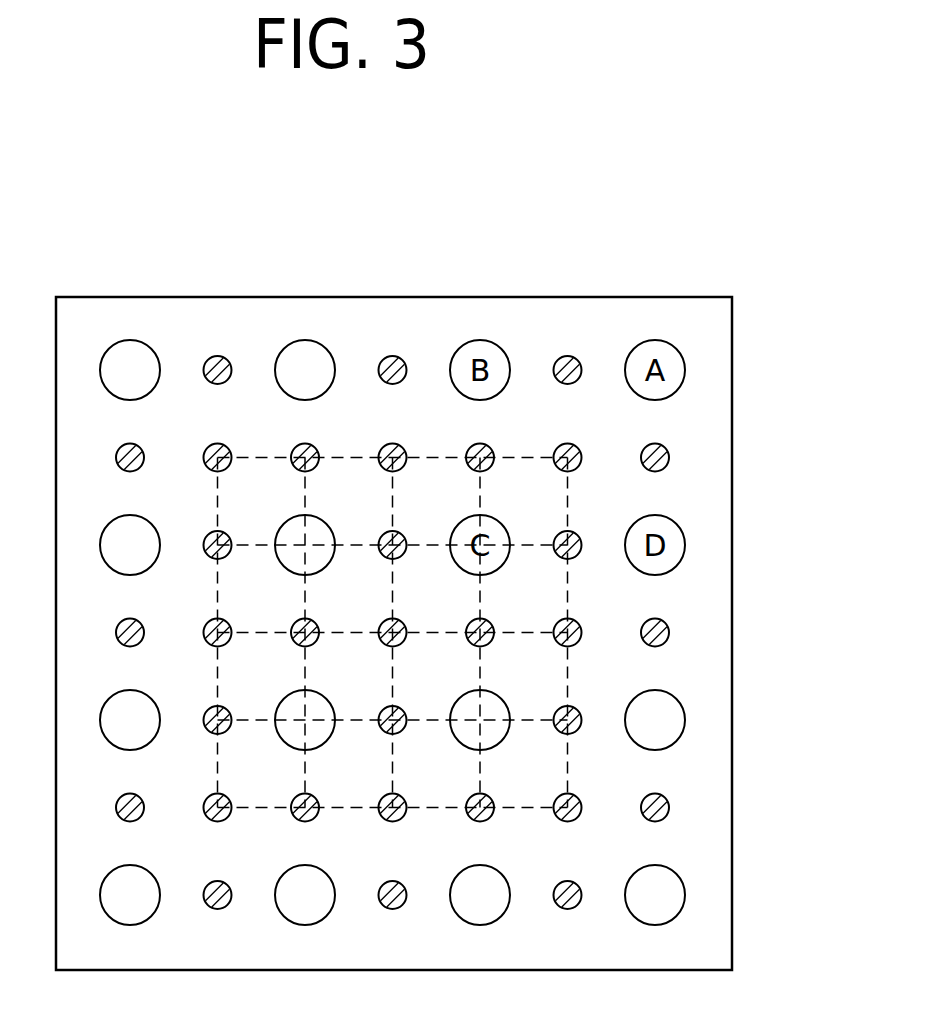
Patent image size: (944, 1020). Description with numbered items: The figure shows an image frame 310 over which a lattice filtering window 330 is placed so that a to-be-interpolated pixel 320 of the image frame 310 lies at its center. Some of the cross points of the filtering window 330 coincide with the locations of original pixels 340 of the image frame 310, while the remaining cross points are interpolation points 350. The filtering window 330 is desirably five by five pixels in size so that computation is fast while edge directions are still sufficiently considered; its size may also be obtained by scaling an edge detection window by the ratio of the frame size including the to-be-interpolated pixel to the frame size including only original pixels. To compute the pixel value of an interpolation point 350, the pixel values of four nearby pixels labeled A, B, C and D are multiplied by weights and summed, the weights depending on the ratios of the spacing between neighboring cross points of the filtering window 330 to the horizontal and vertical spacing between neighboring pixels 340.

The image frame 310 is at (732, 615).
The to-be-interpolated pixel 320 is at (400, 638).
The lattice filtering window 330 is at (568, 500).
The pixels 340 is at (305, 340).
The interpolation points 350 is at (397, 447).